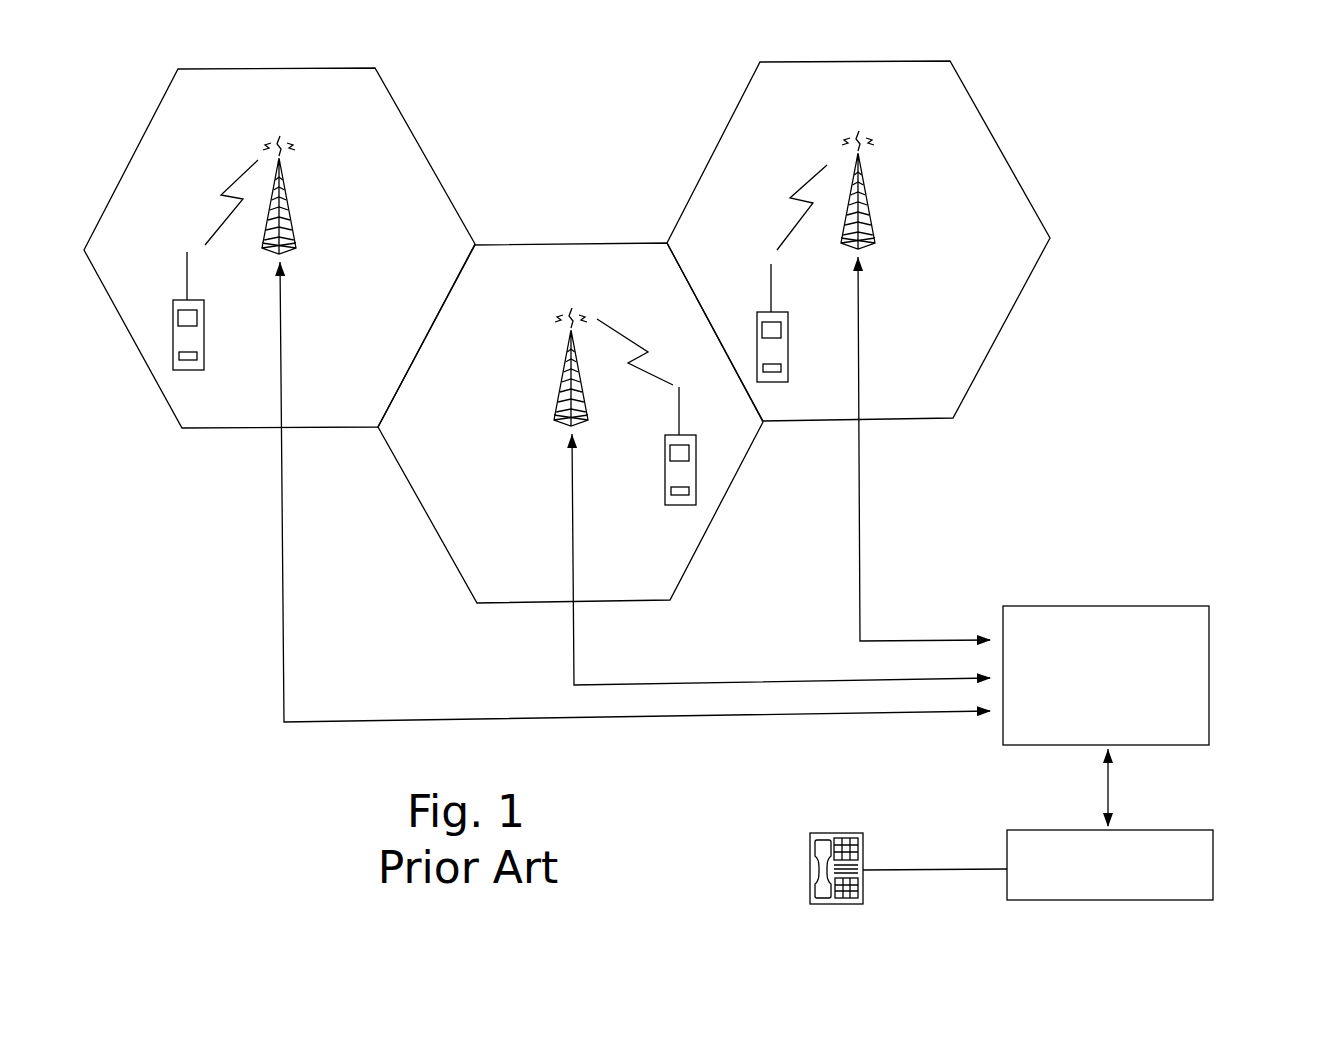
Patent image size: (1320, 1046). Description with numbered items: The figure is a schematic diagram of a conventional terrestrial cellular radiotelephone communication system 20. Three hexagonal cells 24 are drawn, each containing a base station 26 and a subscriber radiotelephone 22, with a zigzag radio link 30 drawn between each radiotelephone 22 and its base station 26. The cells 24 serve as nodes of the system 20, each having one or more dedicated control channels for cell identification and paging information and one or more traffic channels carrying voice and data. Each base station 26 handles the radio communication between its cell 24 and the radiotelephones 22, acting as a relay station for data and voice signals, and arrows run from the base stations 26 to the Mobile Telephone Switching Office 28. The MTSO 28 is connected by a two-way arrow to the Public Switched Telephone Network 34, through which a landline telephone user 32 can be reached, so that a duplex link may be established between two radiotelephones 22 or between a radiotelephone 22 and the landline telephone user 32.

The cellular radiotelephone communication system 20 is at (1220, 166).
The radiotelephone 22 is at (204, 342).
The cell 24 is at (992, 338).
The base station 26 is at (310, 201).
The Mobile Telephone Switching Office 28 is at (1105, 606).
The radio link 30 is at (650, 338).
The landline telephone user 32 is at (810, 868).
The Public Switched Telephone Network 34 is at (1215, 862).